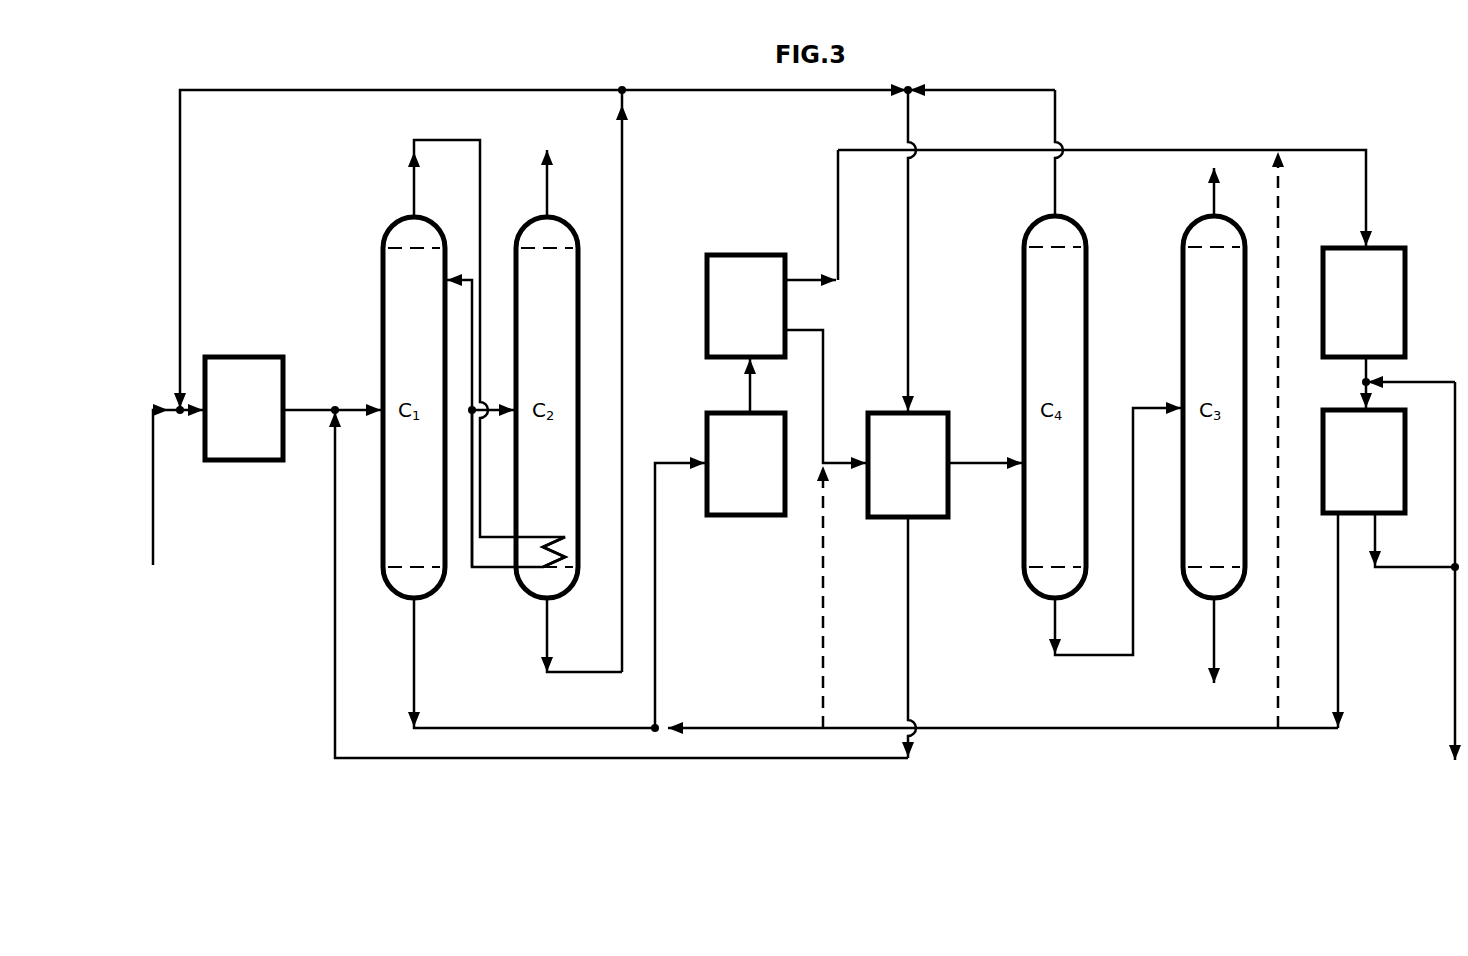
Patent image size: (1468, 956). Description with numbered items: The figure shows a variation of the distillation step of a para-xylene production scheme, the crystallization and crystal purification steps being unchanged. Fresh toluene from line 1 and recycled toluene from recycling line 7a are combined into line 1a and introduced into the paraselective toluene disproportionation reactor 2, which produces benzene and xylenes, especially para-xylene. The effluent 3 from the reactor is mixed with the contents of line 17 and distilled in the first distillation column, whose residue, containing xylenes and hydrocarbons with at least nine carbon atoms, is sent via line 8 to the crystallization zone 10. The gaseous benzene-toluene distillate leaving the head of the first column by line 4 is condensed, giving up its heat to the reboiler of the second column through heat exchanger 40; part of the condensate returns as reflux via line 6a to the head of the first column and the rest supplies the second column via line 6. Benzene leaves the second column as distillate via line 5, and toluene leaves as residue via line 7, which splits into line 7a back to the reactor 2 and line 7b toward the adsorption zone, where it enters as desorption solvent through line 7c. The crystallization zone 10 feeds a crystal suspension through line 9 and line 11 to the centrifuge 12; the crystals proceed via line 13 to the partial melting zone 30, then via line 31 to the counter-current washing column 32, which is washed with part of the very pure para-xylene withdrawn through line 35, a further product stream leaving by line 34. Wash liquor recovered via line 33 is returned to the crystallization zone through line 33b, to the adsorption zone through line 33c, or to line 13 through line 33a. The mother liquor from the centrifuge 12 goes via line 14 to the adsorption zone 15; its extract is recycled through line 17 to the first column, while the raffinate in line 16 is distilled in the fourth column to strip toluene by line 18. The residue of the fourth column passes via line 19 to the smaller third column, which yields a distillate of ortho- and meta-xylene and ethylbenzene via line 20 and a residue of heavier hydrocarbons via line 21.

The line 1 is at (153, 518).
The line 1a is at (193, 418).
The paraselective toluene disproportionation reactor 2 is at (248, 426).
The effluent 3 is at (295, 413).
The overhead line from column C1 4 is at (412, 175).
The line 5 is at (546, 185).
The line 6 is at (500, 406).
The line 6a is at (472, 567).
The line 7 is at (540, 672).
The recycling line 7a is at (180, 250).
The outlet line 7b is at (706, 92).
The line 7c is at (908, 195).
The line 8 is at (414, 690).
The line 9 is at (655, 668).
The crystallization zone 10 is at (761, 479).
The line 11 is at (748, 385).
The centrifuge 12 is at (761, 320).
The line 13 is at (840, 272).
The line 14 is at (825, 345).
The adsorption zone 15 is at (923, 479).
The line 16 is at (1003, 467).
The line 17 is at (335, 590).
The line 18 is at (1055, 110).
The line 19 is at (1052, 625).
The overhead line from column C3 20 is at (1212, 192).
The line 21 is at (1213, 648).
The partial melting zone 30 is at (1378, 316).
The line 31 is at (1362, 370).
The counter-current washing column 32 is at (1378, 474).
The line 33 is at (1338, 683).
The line 33a is at (1280, 197).
The line 33b is at (1168, 730).
The line 33c is at (822, 572).
The line from unit 32 34 is at (1455, 640).
The line 35 is at (1455, 382).
The heat exchanger 40 is at (545, 570).